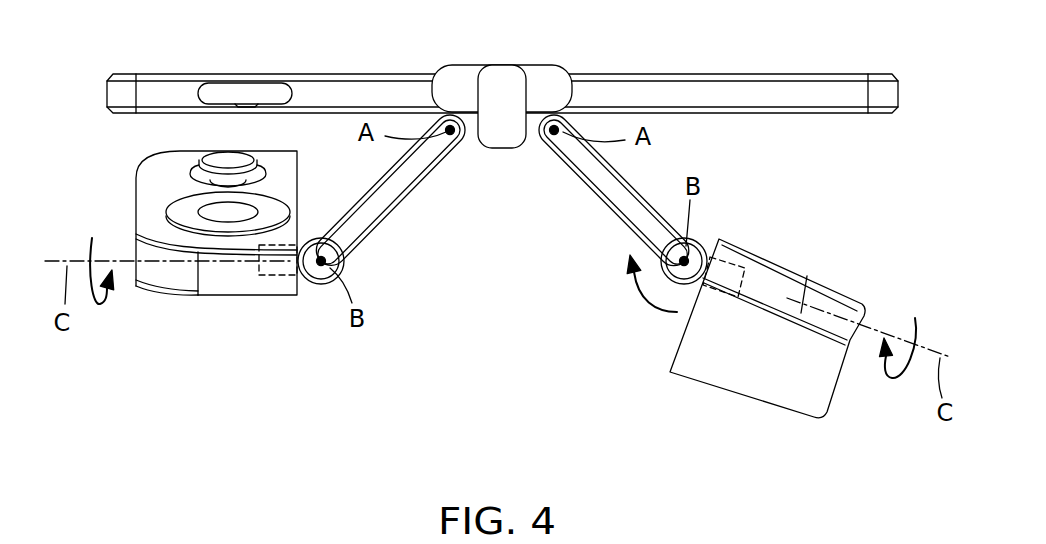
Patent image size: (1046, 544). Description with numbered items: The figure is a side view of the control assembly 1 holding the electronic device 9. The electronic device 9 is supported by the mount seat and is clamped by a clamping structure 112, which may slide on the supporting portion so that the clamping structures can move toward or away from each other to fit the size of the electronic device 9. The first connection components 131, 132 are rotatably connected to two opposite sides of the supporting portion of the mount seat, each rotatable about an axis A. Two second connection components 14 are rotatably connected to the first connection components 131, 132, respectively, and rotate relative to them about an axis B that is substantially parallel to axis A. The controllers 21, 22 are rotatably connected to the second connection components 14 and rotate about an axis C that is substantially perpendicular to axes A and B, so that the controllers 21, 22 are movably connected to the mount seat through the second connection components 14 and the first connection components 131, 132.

The control assembly 1 is at (105, 198).
The electronic device 9 is at (317, 90).
The clamping structure 112 is at (500, 88).
The first connection component 131 is at (397, 186).
The first connection component 132 is at (602, 186).
The second connection component 14 is at (322, 302).
The controller 21 is at (233, 323).
The controller 22 is at (725, 428).